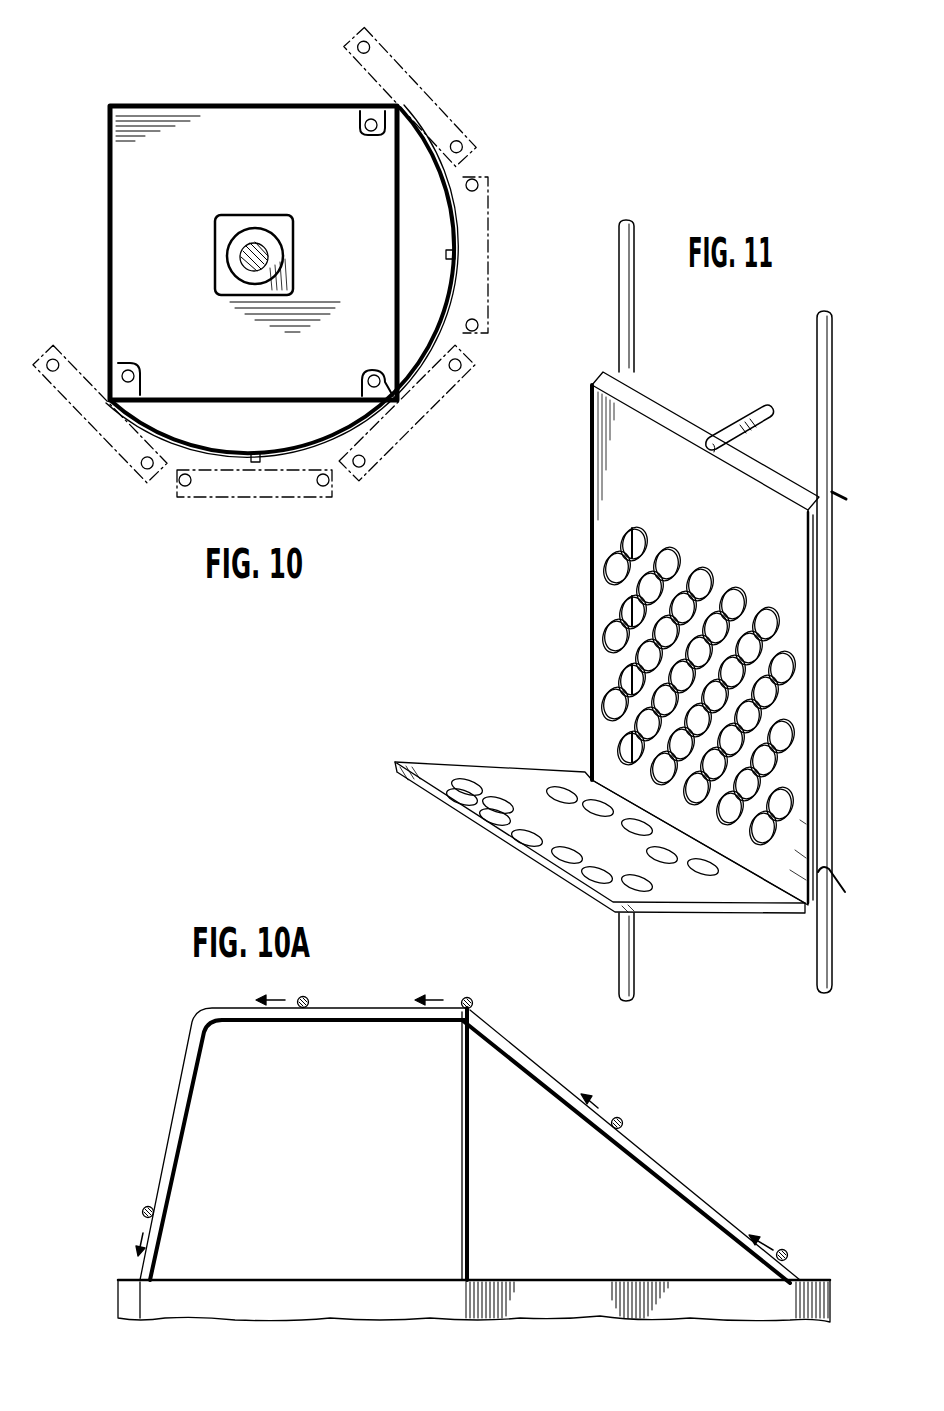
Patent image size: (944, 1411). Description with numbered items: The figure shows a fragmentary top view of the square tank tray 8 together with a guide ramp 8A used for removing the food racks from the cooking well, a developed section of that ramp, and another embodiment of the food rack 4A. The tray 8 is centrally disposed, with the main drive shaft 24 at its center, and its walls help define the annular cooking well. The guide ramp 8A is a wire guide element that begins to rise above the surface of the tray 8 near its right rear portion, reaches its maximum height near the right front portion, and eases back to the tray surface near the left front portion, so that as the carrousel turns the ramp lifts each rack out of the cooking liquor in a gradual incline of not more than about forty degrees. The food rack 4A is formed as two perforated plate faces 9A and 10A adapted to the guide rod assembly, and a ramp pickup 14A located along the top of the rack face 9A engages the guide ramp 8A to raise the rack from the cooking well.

In FIG. 10, the tray 8 is at (243, 123).
In FIG. 10A, the tray 8 is at (304, 1137).
In FIG. 10, the guide ramp 8A is at (450, 177).
In FIG. 10A, the guide ramp 8A is at (672, 1175).
In FIG. 10, the perforated plate face 10A is at (372, 96).
In FIG. 11, the perforated plate face 10A is at (527, 785).
In FIG. 10, the food rack 4A is at (490, 271).
In FIG. 11, the food rack 4A is at (570, 592).
In FIG. 10, the main drive shaft 24 is at (247, 243).
In FIG. 11, the ramp pickup 14A is at (750, 415).
In FIG. 10A, the ramp pickup 14A is at (622, 1120).
In FIG. 11, the perforated plate face 9A is at (810, 618).